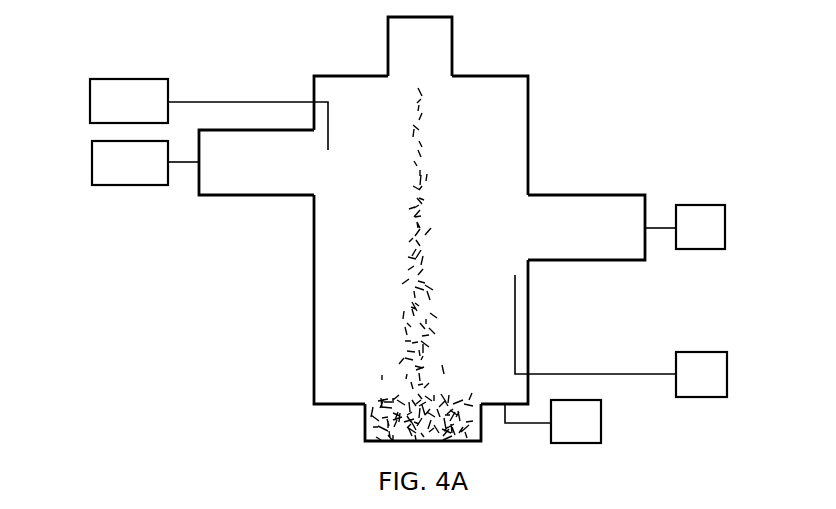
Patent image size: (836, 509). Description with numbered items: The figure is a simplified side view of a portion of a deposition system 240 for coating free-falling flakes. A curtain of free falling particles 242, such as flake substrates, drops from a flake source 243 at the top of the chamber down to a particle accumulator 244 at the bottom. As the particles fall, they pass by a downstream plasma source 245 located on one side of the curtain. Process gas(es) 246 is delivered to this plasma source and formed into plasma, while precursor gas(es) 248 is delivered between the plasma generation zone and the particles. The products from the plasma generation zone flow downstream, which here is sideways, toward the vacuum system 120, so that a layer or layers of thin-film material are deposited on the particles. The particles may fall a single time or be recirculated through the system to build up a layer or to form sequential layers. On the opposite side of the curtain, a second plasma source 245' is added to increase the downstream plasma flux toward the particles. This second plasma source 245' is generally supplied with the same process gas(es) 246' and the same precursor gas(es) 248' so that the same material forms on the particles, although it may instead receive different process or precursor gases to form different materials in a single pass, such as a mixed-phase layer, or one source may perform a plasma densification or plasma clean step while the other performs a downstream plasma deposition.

The deposition system 240 is at (611, 81).
The flake source 243 is at (453, 45).
The downstream plasma source 245 is at (590, 215).
The second plasma source 245' is at (252, 178).
The particle accumulator 244 is at (367, 418).
The free falling particles 242 is at (413, 182).
The precursor gas(es) 248' is at (176, 112).
The process gas(es) 246' is at (111, 160).
The process gas(es) 246 is at (716, 226).
The precursor gas(es) 248 is at (652, 336).
The vacuum system 120 is at (601, 422).